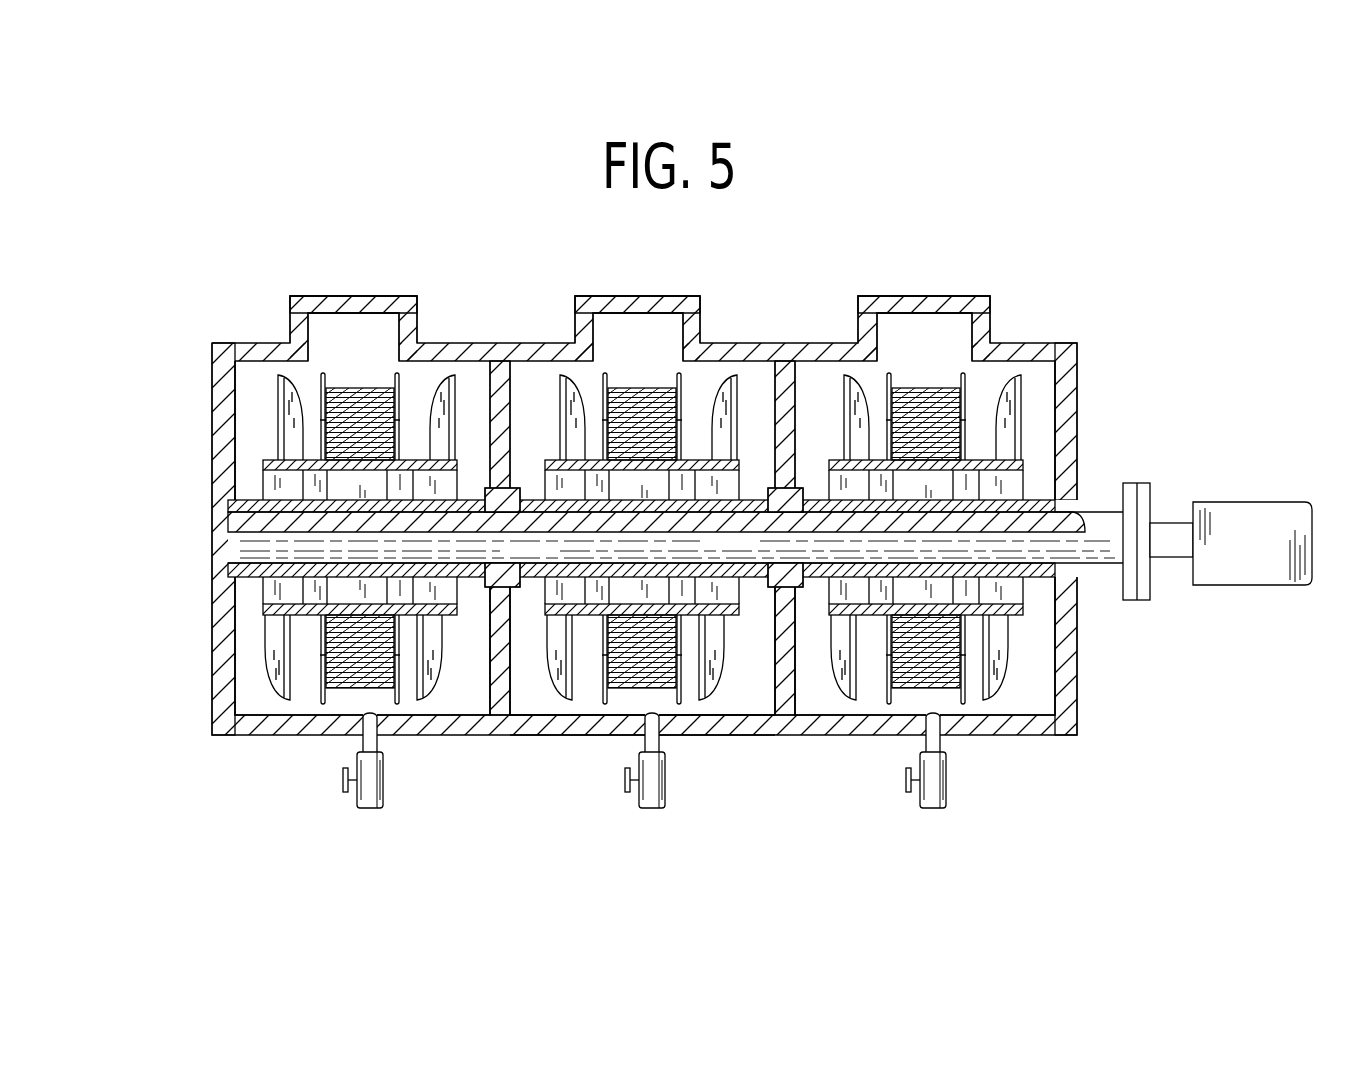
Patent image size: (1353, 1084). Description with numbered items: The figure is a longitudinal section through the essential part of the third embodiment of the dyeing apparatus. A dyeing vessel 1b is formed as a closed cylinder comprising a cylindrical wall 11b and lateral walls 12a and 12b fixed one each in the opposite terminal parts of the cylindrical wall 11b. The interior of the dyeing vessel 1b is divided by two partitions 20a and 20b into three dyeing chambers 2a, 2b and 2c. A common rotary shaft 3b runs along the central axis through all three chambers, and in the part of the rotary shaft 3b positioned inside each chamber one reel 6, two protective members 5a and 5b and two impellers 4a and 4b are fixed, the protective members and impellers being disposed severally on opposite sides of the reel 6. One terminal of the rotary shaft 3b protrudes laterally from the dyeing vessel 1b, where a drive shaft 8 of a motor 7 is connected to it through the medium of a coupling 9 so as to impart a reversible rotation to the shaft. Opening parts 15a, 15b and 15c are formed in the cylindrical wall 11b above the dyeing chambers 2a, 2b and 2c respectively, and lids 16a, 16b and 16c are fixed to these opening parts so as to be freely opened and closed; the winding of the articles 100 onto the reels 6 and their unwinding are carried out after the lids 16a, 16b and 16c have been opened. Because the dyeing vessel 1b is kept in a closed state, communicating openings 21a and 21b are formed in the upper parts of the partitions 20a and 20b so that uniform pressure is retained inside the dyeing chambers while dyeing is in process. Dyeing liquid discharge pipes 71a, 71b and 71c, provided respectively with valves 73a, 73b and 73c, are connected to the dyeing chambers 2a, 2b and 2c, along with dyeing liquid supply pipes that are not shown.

The dyeing vessel 1b is at (1073, 332).
The dyeing chamber 2a is at (253, 697).
The dyeing chamber 2b is at (533, 695).
The dyeing chamber 2c is at (1045, 703).
The common rotary shaft 3b is at (1100, 511).
The impeller 4a is at (852, 707).
The impeller 4b is at (1005, 706).
The protective member 5a is at (890, 706).
The protective member 5b is at (970, 706).
The reel 6 is at (907, 625).
The motor 7 is at (1223, 502).
The drive shaft 8 is at (1168, 522).
The coupling 9 is at (1137, 482).
The cylindrical wall 11b is at (702, 734).
The lateral wall 12a is at (212, 388).
The lateral wall 12b is at (1077, 370).
The opening part 15a is at (290, 323).
The opening part 15b is at (575, 325).
The opening part 15c is at (858, 328).
The lid 16a is at (337, 295).
The lid 16b is at (633, 300).
The lid 16c is at (915, 300).
The partition 20a is at (492, 700).
The partition 20b is at (772, 700).
The communicating opening 21a is at (495, 366).
The communicating opening 21b is at (782, 366).
The dyeing liquid discharge pipe 71a is at (384, 795).
The dyeing liquid discharge pipe 71b is at (666, 795).
The dyeing liquid discharge pipe 71c is at (947, 803).
The valve 73a is at (343, 787).
The valve 73b is at (625, 790).
The valve 73c is at (906, 793).
The articles 100 is at (360, 389).